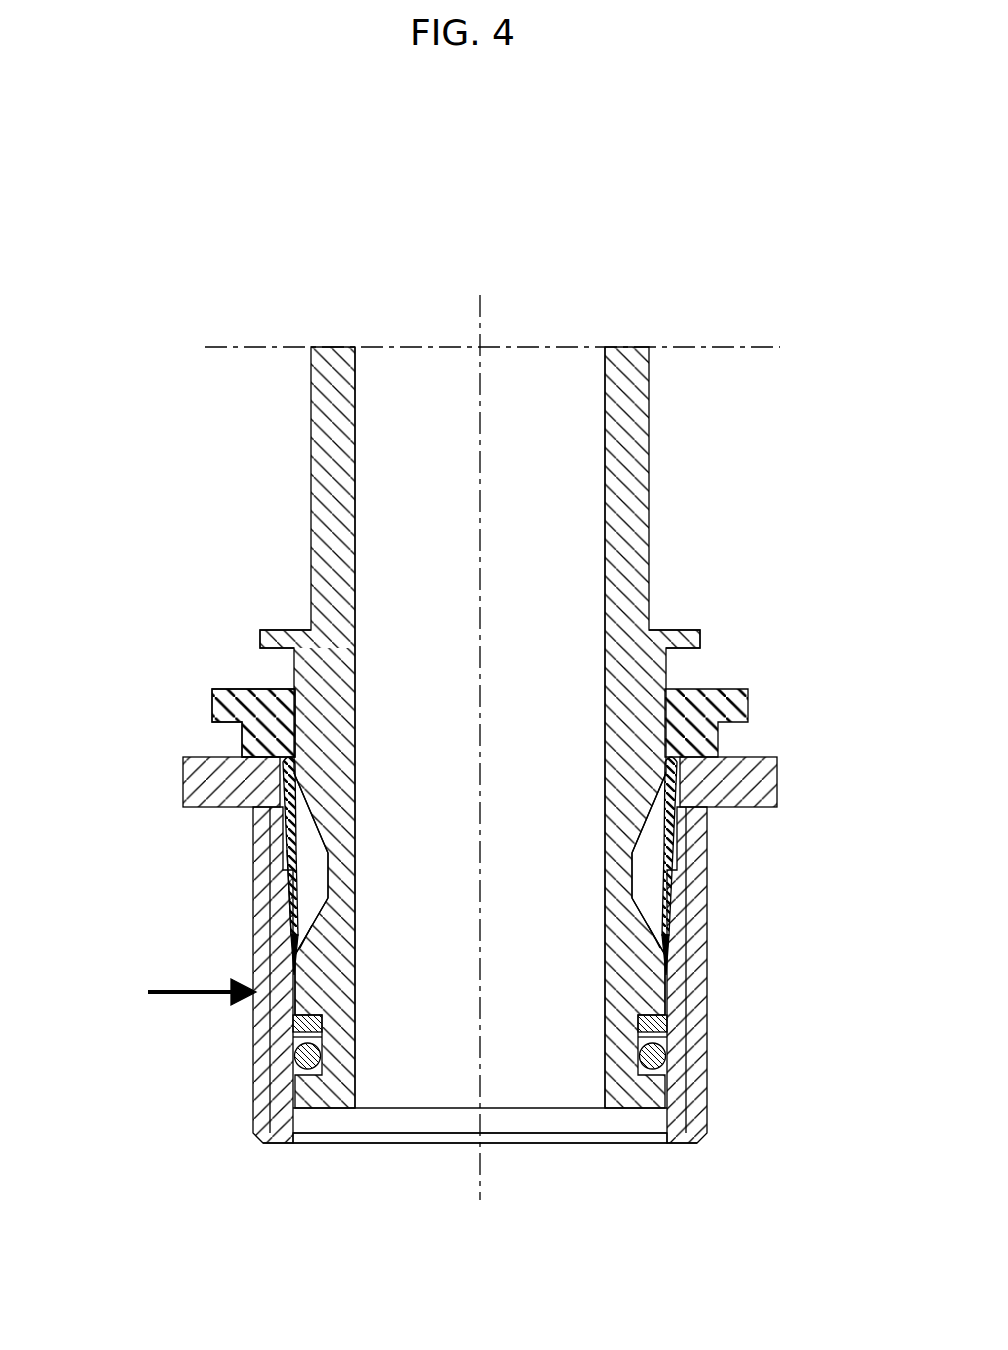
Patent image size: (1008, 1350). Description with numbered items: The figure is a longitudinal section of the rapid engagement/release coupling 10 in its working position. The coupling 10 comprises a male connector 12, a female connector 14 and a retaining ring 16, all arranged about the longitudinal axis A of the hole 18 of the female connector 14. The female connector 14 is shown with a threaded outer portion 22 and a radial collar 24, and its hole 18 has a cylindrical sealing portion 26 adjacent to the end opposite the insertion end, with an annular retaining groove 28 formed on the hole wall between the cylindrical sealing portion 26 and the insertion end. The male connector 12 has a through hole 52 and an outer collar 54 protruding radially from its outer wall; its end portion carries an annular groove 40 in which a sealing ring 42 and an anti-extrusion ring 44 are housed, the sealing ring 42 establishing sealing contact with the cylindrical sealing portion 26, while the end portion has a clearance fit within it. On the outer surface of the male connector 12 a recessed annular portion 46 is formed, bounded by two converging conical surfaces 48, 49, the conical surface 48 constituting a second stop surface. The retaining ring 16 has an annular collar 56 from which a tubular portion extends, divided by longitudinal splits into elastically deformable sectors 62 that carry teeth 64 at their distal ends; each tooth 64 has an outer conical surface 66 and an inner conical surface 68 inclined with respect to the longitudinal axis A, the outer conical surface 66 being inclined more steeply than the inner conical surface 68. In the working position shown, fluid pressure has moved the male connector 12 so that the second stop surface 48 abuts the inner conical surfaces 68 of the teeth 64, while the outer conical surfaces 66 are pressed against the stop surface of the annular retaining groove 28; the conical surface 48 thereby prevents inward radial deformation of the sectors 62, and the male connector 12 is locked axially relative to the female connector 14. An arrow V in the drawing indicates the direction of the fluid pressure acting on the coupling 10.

The rapid engagement/release coupling 10 is at (146, 389).
The male connector 12 is at (688, 504).
The female connector 14 is at (750, 877).
The retaining ring 16 is at (752, 710).
The hole 18 is at (297, 1135).
The threaded outer portion 22 is at (693, 948).
The radial collar 24 is at (183, 791).
The cylindrical sealing portion 26 is at (664, 1138).
The annular retaining groove 28 is at (297, 974).
The annular groove 40 is at (293, 1036).
The sealing ring 42 is at (670, 1058).
The anti-extrusion ring 44 is at (672, 1026).
The recessed annular portion 46 is at (320, 866).
The conical surface 48 is at (330, 898).
The conical surface 49 is at (300, 795).
The through hole 52 is at (356, 550).
The outer collar 54 is at (699, 637).
The annular collar 56 is at (213, 700).
The elastically deformable sectors 62 is at (284, 856).
The teeth 64 is at (290, 964).
The outer conical surface 66 is at (285, 930).
The inner conical surface 68 is at (313, 955).
The longitudinal axis A is at (480, 437).
The fluid direction V is at (188, 997).